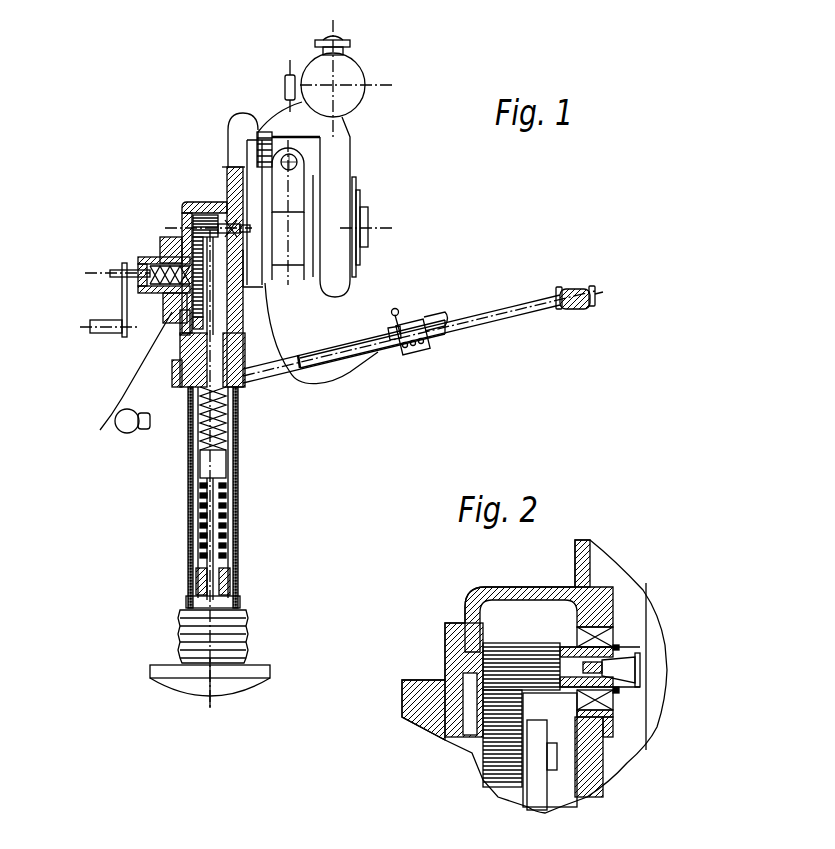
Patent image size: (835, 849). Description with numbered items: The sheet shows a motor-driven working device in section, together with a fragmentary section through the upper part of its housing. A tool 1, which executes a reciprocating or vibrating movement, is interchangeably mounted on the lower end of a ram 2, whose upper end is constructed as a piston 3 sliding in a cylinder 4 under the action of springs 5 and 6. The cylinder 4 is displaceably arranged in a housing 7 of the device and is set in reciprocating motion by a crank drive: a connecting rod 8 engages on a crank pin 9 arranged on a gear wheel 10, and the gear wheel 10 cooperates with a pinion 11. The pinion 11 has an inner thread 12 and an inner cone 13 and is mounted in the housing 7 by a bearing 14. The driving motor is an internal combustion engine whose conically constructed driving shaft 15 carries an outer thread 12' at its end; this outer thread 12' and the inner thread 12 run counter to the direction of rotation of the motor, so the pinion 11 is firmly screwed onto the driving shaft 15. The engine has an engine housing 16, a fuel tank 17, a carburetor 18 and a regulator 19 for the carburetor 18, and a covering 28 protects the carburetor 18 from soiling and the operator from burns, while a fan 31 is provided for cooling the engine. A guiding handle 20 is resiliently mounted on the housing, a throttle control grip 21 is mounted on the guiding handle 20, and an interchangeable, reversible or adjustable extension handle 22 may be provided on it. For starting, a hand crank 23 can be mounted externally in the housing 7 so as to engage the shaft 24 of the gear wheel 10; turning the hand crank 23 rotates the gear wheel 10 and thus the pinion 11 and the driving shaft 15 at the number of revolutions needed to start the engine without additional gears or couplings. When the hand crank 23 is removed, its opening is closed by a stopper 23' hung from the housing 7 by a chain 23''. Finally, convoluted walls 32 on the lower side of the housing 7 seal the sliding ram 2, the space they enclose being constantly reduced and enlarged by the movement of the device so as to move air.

In FIG. 1, the tool 1 is at (190, 685).
In FIG. 1, the ram 2 is at (213, 533).
In FIG. 1, the piston 3 is at (213, 460).
In FIG. 1, the cylinder 4 is at (197, 517).
In FIG. 1, the spring 5 is at (195, 553).
In FIG. 1, the spring 6 is at (197, 420).
In FIG. 1, the housing 7 is at (163, 238).
In FIG. 2, the housing 7 is at (418, 712).
In FIG. 1, the connecting rod 8 is at (187, 377).
In FIG. 1, the crank pin 9 is at (140, 262).
In FIG. 1, the gear wheel 10 is at (178, 310).
In FIG. 1, the pinion 11 is at (187, 208).
In FIG. 2, the pinion 11 is at (522, 652).
In FIG. 2, the inner thread 12 is at (591, 648).
In FIG. 2, the outer thread 12' is at (611, 723).
In FIG. 2, the inner cone 13 is at (616, 648).
In FIG. 1, the bearing 14 is at (218, 202).
In FIG. 2, the bearing 14 is at (614, 645).
In FIG. 1, the driving shaft 15 is at (365, 230).
In FIG. 2, the driving shaft 15 is at (617, 672).
In FIG. 1, the engine housing 16 is at (338, 170).
In FIG. 1, the fuel tank 17 is at (345, 70).
In FIG. 1, the carburetor 18 is at (300, 157).
In FIG. 1, the regulator 19 is at (273, 322).
In FIG. 1, the guiding handle 20 is at (335, 350).
In FIG. 1, the throttle control grip 21 is at (402, 313).
In FIG. 1, the extension handle 22 is at (496, 318).
In FIG. 1, the hand crank 23 is at (96, 314).
In FIG. 1, the chain 23'' is at (112, 378).
In FIG. 1, the stopper 23' is at (106, 438).
In FIG. 1, the shaft 24 is at (175, 285).
In FIG. 1, the covering 28 is at (288, 187).
In FIG. 1, the fan 31 is at (283, 152).
In FIG. 1, the convoluted walls 32 is at (223, 643).